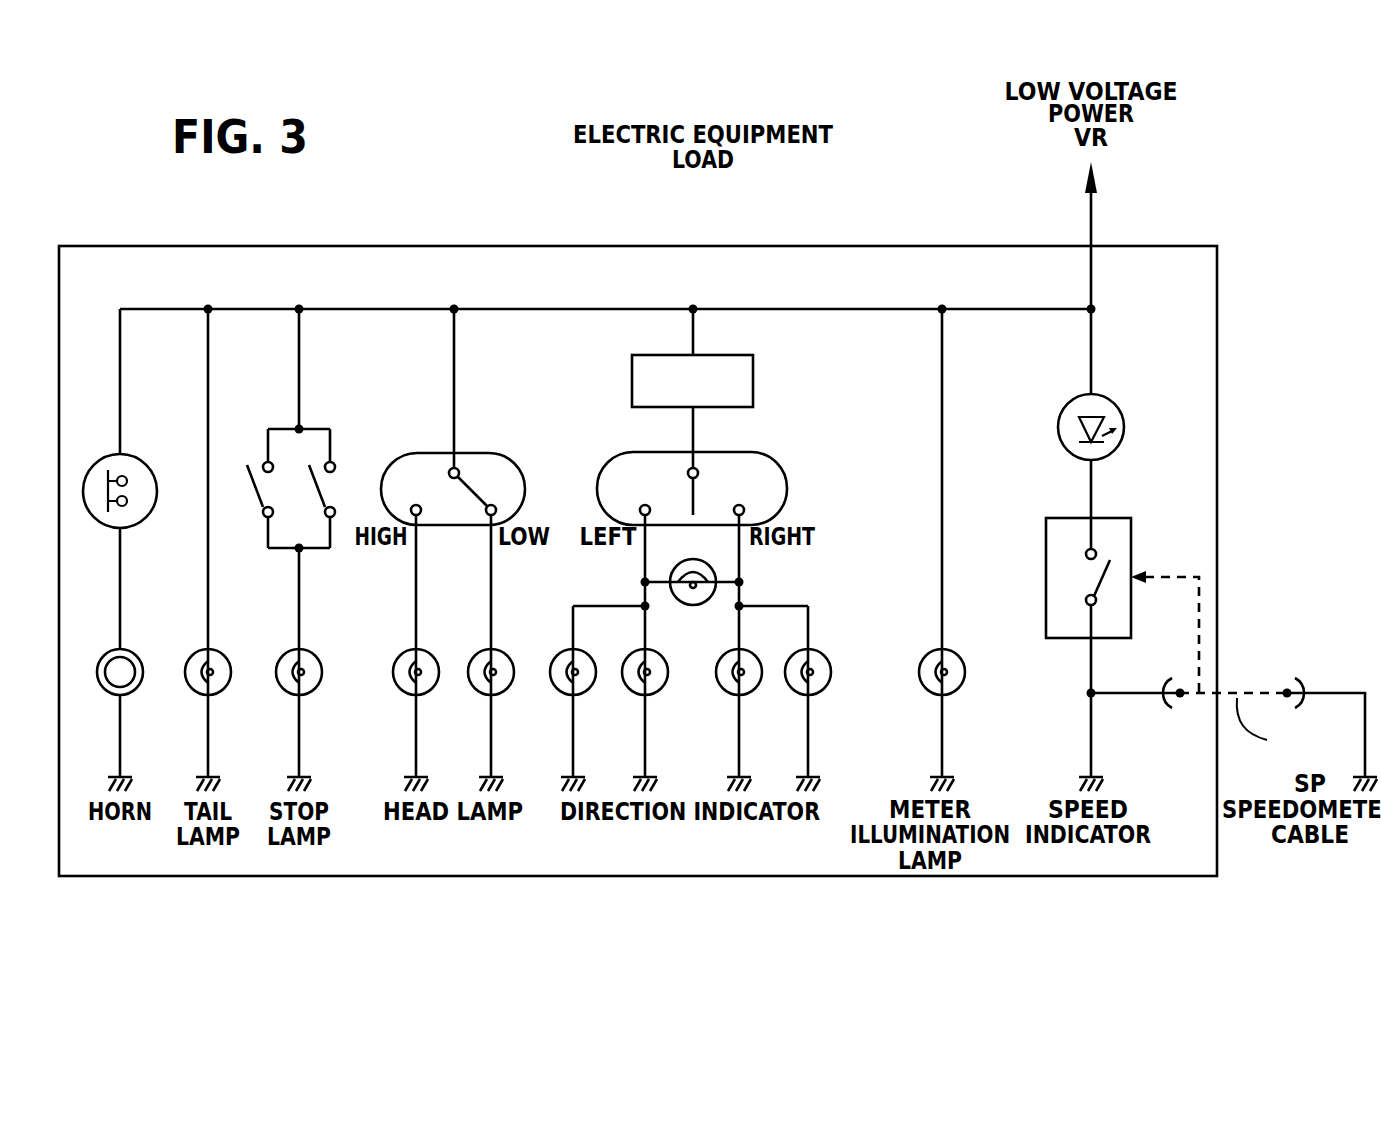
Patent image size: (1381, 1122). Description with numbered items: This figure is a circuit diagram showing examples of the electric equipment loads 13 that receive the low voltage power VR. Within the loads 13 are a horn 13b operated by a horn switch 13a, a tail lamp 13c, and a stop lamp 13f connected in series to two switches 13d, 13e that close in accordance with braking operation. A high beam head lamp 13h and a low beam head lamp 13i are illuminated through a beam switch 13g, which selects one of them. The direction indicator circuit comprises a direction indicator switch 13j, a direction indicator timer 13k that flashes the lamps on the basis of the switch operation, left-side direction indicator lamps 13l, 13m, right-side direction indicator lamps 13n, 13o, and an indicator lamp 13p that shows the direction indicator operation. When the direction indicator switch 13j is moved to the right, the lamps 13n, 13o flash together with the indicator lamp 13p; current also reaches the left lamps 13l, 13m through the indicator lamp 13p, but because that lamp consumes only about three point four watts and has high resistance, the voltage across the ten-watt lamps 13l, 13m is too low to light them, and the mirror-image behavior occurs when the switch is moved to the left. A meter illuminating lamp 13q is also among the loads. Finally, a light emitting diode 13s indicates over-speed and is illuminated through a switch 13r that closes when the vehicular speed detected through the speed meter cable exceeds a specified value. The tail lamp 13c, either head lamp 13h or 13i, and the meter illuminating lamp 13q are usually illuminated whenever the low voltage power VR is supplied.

The electric equipment loads 13 is at (660, 240).
The horn switch 13a is at (137, 459).
The horn 13b is at (125, 694).
The tail lamp 13c is at (213, 694).
The switch 13d is at (262, 463).
The switch 13e is at (336, 462).
The stop lamp 13f is at (303, 694).
The beam switch 13g is at (525, 478).
The high beam head lamp 13h is at (421, 694).
The low beam head lamp 13i is at (495, 694).
The direction indicator switch 13j is at (787, 478).
The direction indicator timer 13k is at (753, 380).
The direction indicator lamp 13l is at (578, 694).
The direction indicator lamp 13m is at (650, 694).
The direction indicator lamp 13n is at (743, 694).
The direction indicator lamp 13o is at (813, 694).
The indicator lamp 13p is at (705, 560).
The meter illuminating lamp 13q is at (947, 694).
The switch 13r is at (1131, 532).
The light emitting diode 13s is at (1115, 410).